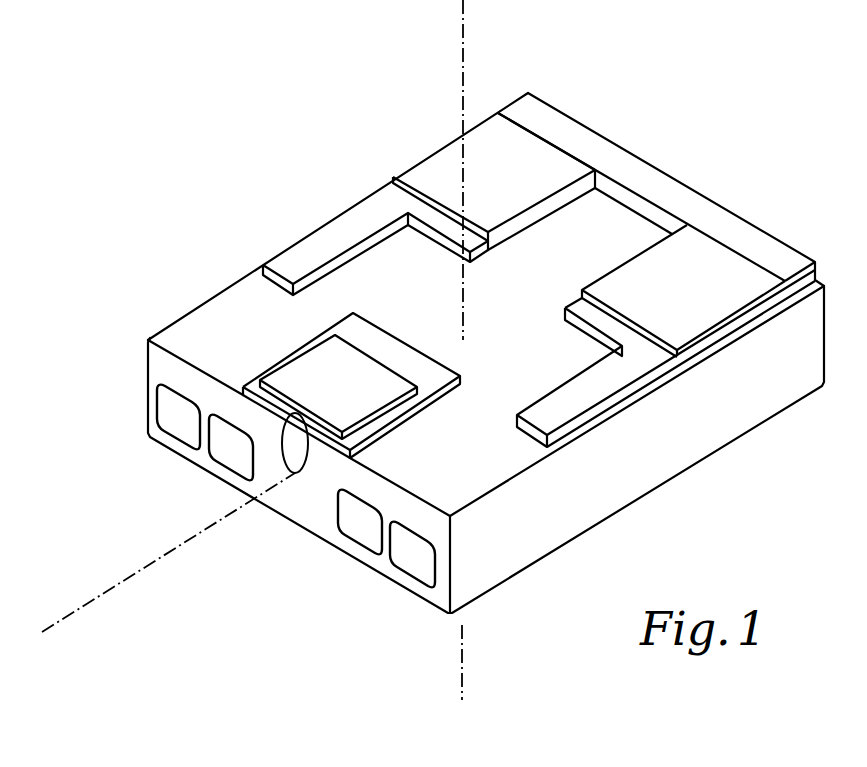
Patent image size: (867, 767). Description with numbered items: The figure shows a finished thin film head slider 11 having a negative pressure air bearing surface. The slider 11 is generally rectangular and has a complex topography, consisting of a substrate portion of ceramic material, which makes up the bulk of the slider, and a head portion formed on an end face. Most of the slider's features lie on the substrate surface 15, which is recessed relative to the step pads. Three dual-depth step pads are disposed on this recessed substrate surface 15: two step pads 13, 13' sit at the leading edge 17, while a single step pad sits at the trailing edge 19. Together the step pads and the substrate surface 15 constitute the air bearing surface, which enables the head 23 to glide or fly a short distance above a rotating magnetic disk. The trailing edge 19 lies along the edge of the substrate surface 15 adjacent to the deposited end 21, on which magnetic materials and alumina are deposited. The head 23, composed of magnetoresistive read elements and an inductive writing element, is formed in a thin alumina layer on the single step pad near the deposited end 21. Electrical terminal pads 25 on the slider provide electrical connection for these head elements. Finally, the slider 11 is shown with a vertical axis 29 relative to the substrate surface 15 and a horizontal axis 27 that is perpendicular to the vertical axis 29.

The thin film head slider 11 is at (313, 208).
The dual-depth step pad 13 is at (468, 204).
The dual-depth step pad 13' is at (666, 336).
The substrate surface 15 is at (528, 309).
The leading edge 17 is at (727, 207).
The trailing edge 19 is at (322, 443).
The deposited end 21 is at (322, 520).
The head 23 is at (294, 412).
The electrical terminal pads 25 is at (418, 564).
The horizontal axis 27 is at (134, 580).
The vertical axis 29 is at (478, 65).